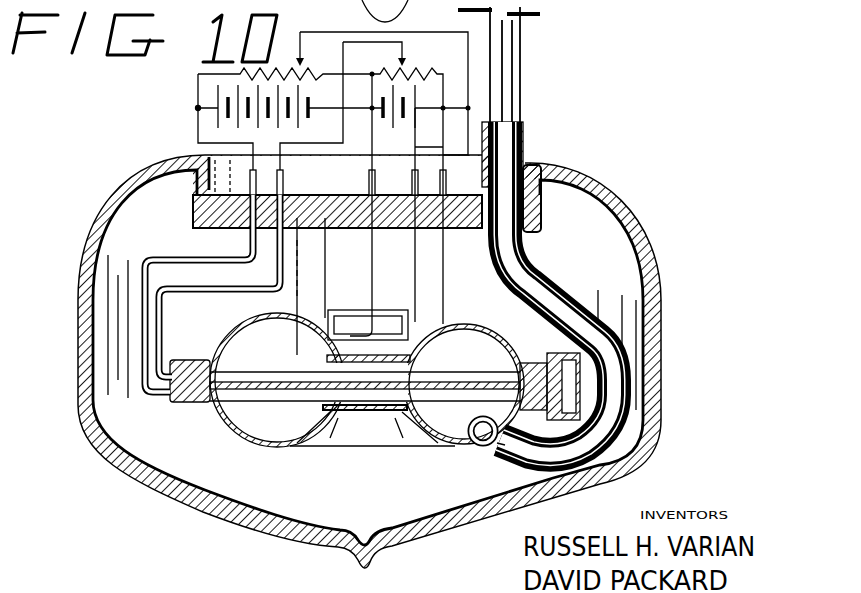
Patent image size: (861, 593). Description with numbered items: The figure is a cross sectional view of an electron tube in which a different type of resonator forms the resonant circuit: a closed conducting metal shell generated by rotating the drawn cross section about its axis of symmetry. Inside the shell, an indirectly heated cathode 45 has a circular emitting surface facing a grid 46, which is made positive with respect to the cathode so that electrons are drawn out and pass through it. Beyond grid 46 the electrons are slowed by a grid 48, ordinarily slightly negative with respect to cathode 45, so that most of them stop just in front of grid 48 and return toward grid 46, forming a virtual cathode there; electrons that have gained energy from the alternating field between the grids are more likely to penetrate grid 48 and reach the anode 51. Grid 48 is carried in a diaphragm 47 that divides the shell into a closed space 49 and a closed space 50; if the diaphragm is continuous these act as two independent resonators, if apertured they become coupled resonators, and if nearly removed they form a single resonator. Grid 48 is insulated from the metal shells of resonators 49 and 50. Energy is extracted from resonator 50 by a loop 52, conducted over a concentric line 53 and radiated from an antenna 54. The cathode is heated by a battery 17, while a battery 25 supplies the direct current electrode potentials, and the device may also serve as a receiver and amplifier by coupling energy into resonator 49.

The battery 17 is at (393, 128).
The B battery 25 is at (304, 120).
The indirectly heated cathode 45 is at (348, 310).
The grid 46 is at (330, 358).
The diaphragm 47 is at (258, 393).
The grid 48 is at (408, 378).
The closed space (resonator) 49 is at (468, 356).
The closed space (resonator) 50 is at (455, 433).
The anode 51 is at (362, 409).
The loop 52 is at (476, 406).
The concentric line 53 is at (545, 277).
The antenna 54 is at (540, 16).